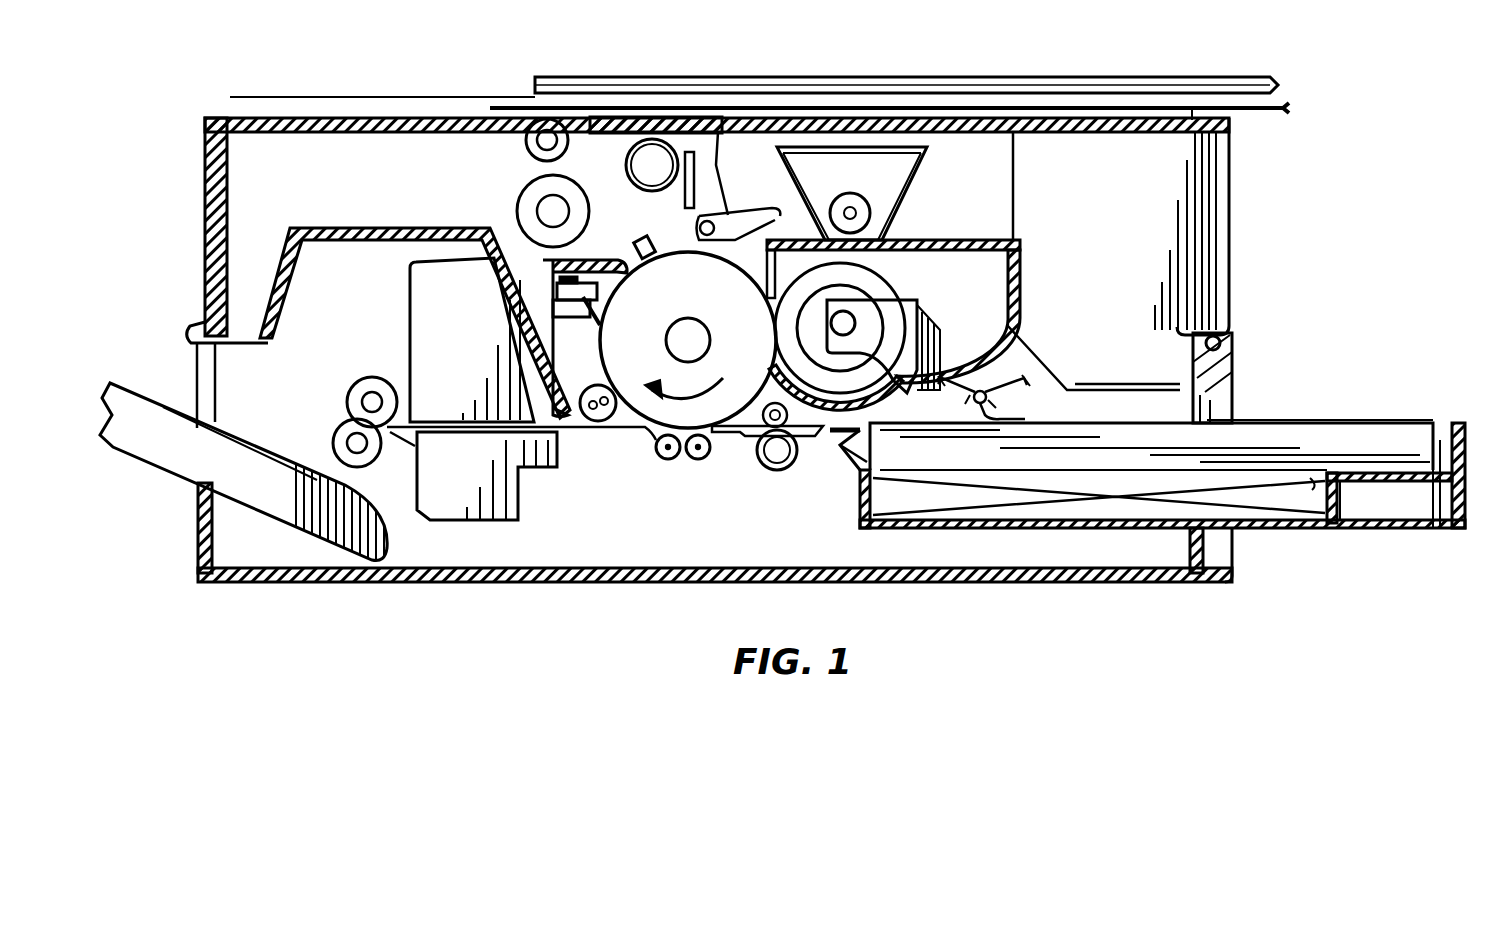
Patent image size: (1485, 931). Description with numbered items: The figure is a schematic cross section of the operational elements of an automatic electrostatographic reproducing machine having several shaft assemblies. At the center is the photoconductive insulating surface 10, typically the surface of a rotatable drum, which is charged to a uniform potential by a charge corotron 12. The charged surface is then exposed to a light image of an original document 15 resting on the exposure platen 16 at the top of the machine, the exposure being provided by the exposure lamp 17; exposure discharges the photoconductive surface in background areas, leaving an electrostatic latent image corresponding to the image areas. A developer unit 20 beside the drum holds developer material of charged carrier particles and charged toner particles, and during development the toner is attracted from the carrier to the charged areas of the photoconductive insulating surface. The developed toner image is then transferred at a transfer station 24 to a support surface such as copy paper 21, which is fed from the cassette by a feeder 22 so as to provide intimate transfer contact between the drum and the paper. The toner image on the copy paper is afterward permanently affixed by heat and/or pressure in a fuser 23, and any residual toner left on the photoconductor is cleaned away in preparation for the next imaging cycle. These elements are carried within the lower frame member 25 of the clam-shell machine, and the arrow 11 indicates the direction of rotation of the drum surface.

The photoconductive insulating surface 10 is at (703, 258).
The rotation direction arrow 11 is at (713, 388).
The charge corotron 12 is at (650, 236).
The original document 15 is at (626, 118).
The exposure platen 16 is at (710, 118).
The exposure lamp 17 is at (627, 172).
The developer unit 20 is at (953, 273).
The copy paper 21 is at (950, 406).
The feeder 22 is at (1018, 378).
The fuser 23 is at (430, 390).
The transfer station 24 is at (652, 453).
The lower frame member 25 is at (598, 327).